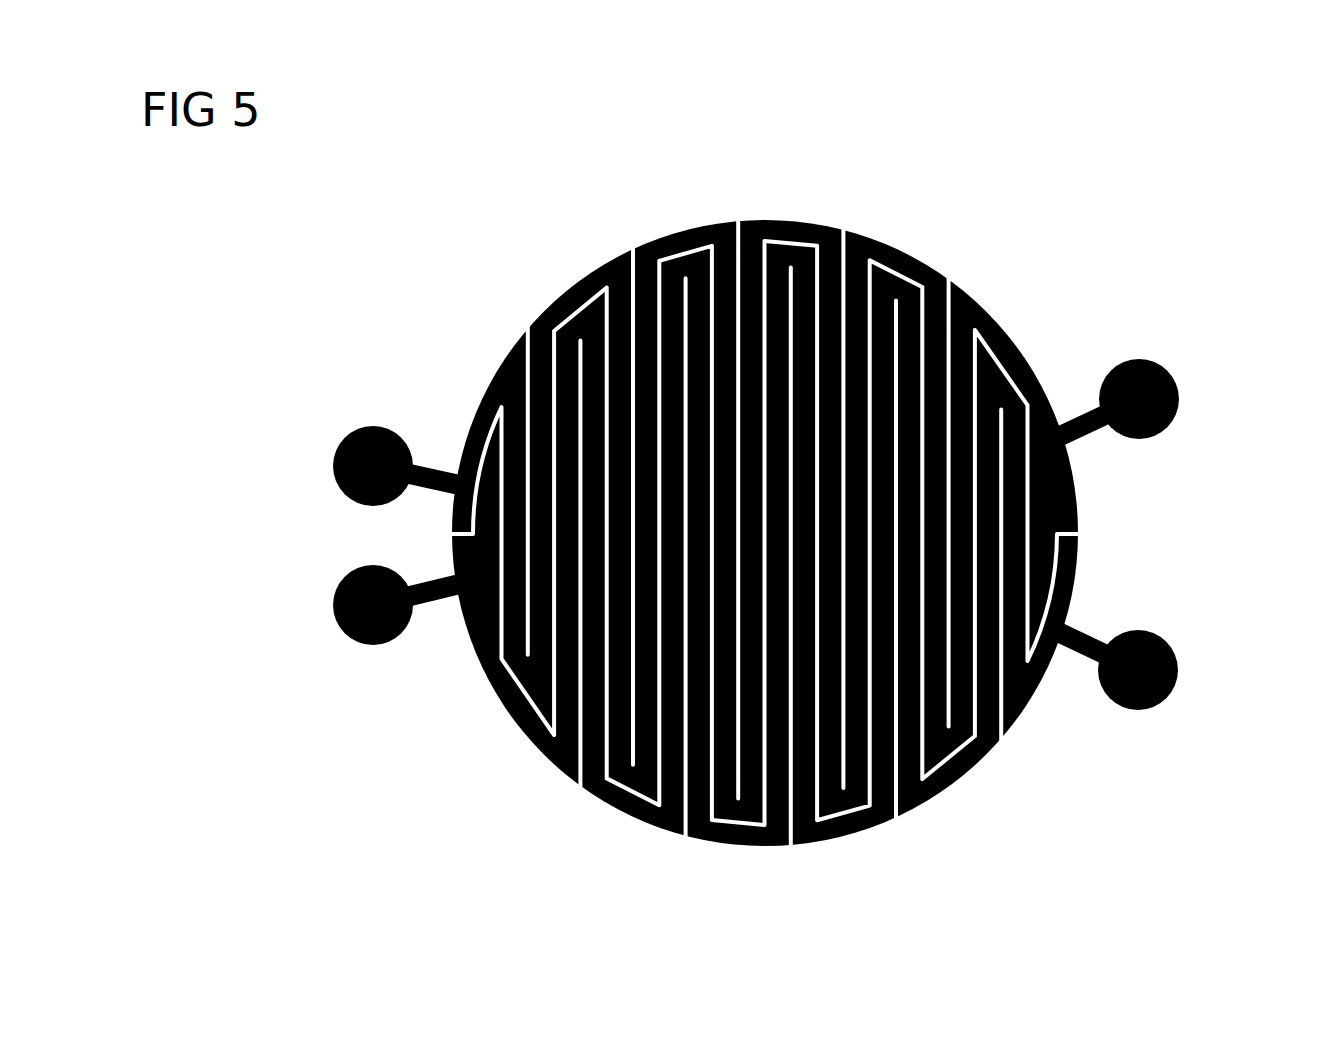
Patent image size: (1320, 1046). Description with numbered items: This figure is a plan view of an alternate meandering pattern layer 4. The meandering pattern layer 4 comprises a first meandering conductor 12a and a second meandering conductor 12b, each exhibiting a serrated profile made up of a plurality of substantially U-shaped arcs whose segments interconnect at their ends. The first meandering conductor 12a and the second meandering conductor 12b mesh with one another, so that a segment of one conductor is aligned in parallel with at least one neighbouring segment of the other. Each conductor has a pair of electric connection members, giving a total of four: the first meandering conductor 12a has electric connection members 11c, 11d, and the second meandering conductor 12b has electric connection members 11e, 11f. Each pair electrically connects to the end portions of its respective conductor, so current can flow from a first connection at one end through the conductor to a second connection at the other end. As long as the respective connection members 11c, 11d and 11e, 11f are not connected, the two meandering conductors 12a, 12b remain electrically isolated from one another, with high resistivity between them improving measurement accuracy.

The meandering pattern layer 4 is at (763, 485).
The first meandering conductor 12a is at (991, 279).
The second meandering conductor 12b is at (897, 219).
The electric connection member 11c is at (355, 466).
The electric connection member 11d is at (1161, 399).
The electric connection member 11e is at (355, 605).
The electric connection member 11f is at (1157, 670).